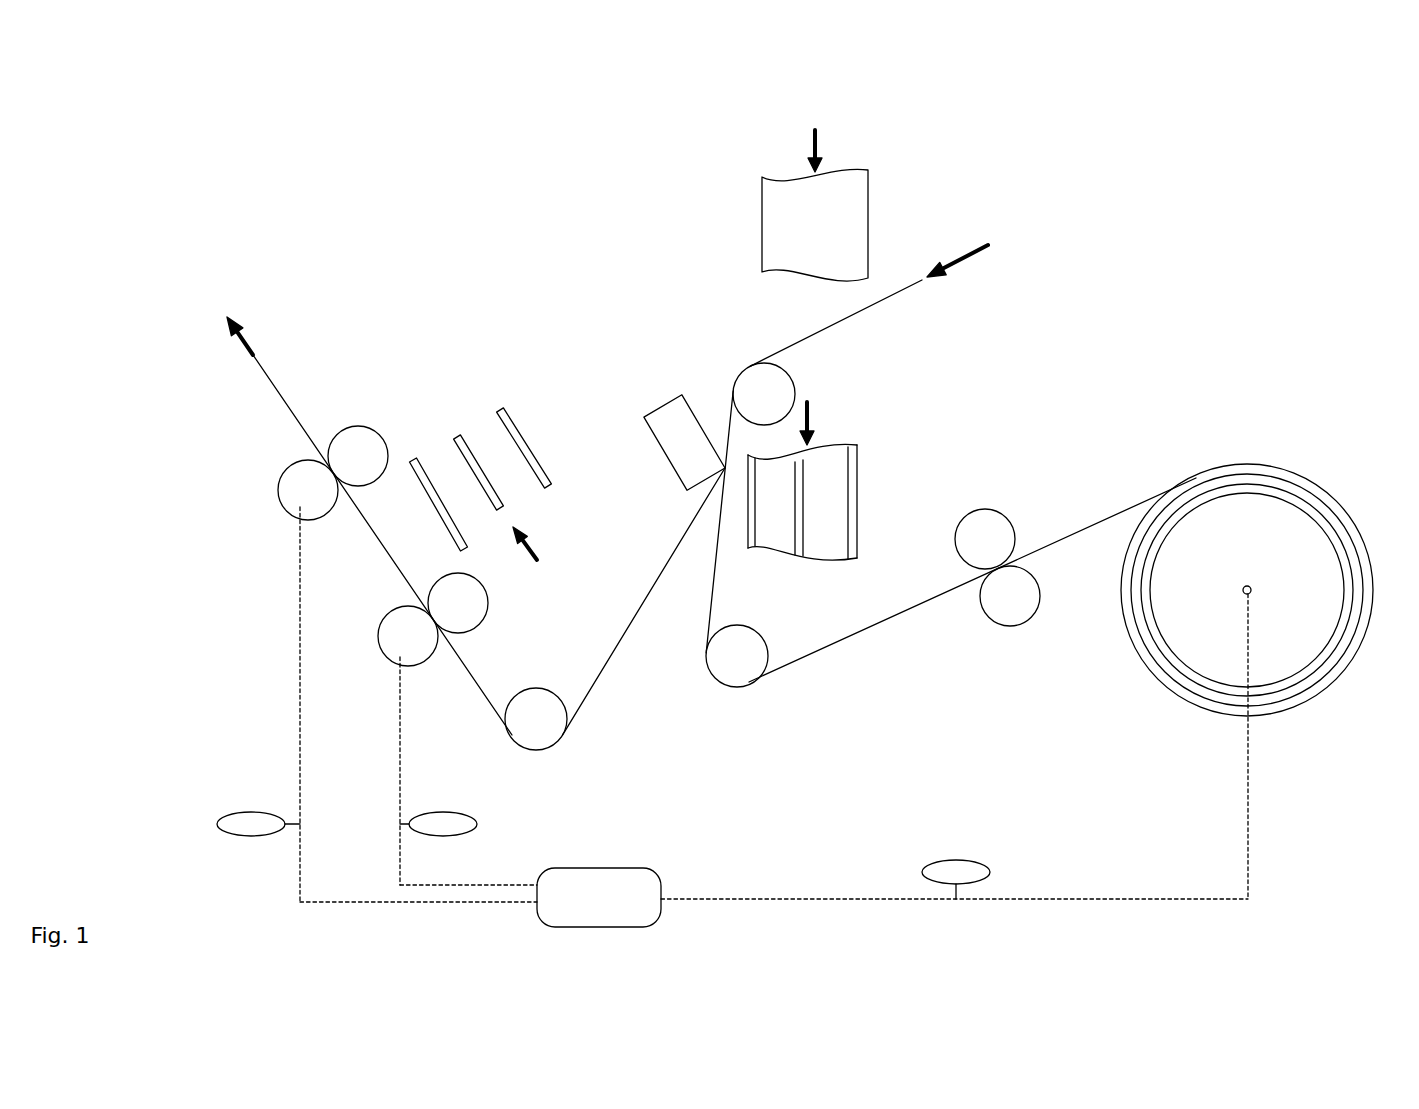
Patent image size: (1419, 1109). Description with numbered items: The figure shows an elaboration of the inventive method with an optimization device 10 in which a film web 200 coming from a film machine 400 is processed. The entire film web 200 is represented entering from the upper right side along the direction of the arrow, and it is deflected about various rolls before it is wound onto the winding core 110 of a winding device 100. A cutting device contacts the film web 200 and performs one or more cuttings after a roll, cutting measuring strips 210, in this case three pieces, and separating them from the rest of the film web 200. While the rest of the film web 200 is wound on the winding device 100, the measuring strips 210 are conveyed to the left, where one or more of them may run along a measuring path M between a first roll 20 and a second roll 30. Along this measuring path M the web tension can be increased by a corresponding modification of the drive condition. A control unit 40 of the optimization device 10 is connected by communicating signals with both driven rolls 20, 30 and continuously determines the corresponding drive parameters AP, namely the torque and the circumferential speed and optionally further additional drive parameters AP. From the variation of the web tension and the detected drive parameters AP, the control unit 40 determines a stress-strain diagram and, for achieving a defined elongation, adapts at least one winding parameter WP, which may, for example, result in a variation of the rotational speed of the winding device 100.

The film machine 400 is at (481, 167).
The optimization device 10 is at (639, 799).
The first roll 20 is at (388, 640).
The second roll 30 is at (290, 493).
The control unit 40 is at (774, 717).
The winding device 100 is at (1223, 348).
The winding core 110 is at (1248, 583).
The film web 200 is at (862, 213).
The measuring strips 210 is at (453, 413).
The measuring path M is at (373, 567).
The drive parameters AP is at (250, 812).
The winding parameter WP is at (950, 861).